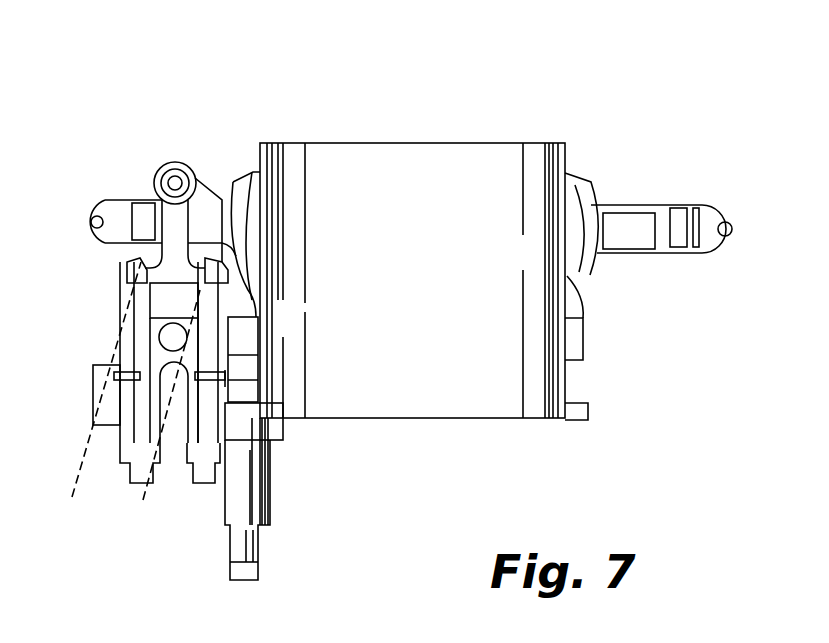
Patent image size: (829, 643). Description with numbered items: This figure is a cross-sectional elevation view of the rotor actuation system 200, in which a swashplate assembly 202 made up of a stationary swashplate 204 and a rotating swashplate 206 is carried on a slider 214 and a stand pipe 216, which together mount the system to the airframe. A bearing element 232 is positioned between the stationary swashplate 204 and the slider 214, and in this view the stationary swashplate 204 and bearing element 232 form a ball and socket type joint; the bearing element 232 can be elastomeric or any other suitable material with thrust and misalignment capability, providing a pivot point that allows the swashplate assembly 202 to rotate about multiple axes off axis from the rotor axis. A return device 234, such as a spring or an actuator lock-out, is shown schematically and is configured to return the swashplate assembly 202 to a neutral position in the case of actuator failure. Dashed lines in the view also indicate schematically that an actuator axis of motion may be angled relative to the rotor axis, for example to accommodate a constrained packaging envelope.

The rotor actuation system 200 is at (218, 100).
The swashplate assembly 202 is at (719, 176).
The stationary swashplate 204 is at (606, 207).
The rotating swashplate 206 is at (726, 254).
The slider 214 is at (583, 334).
The stand pipe 216 is at (574, 142).
The bearing element 232 is at (582, 178).
The return device 234 is at (92, 385).